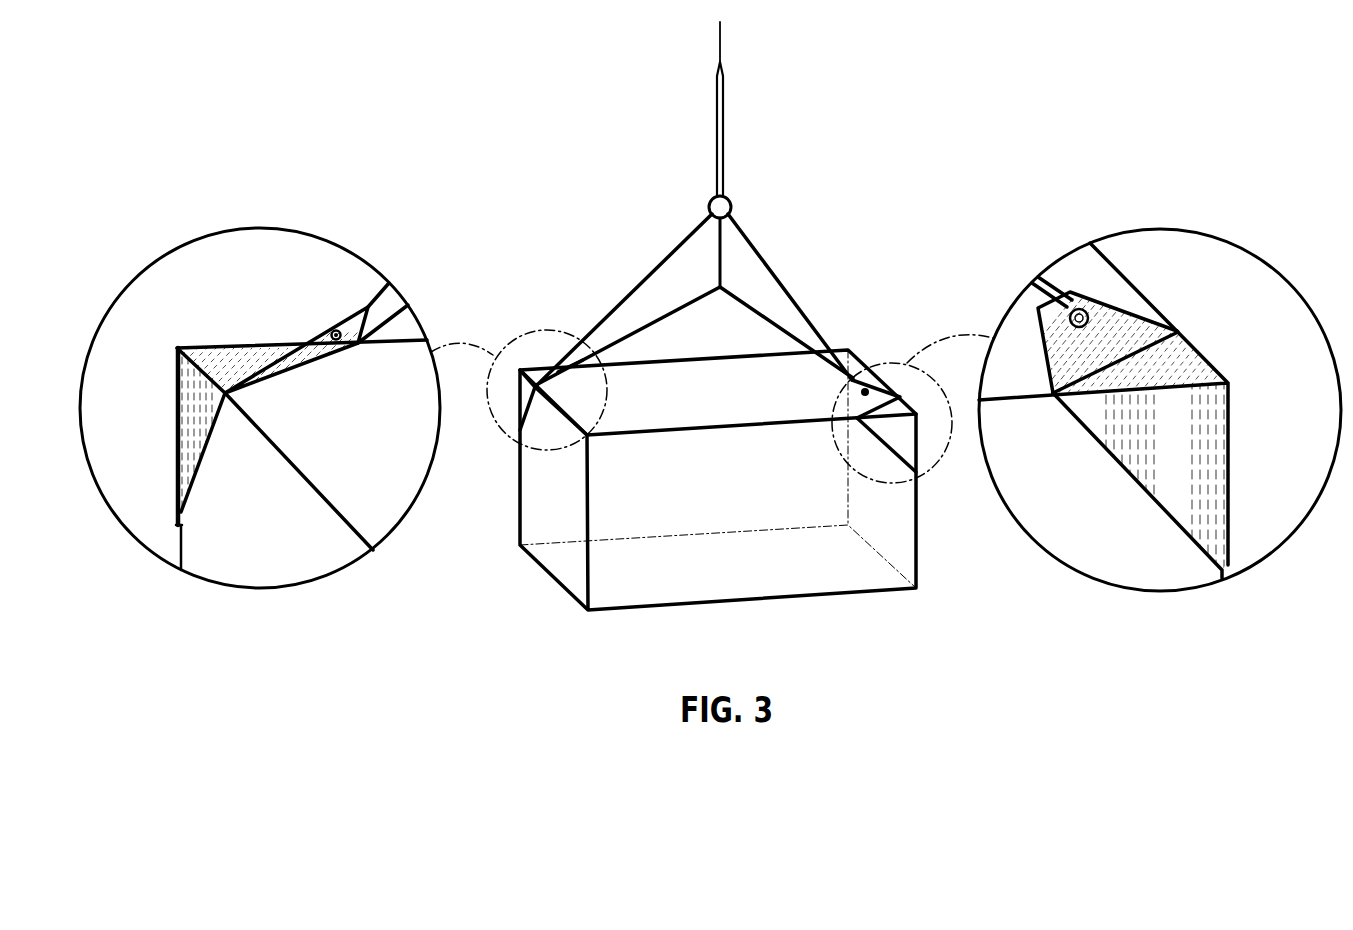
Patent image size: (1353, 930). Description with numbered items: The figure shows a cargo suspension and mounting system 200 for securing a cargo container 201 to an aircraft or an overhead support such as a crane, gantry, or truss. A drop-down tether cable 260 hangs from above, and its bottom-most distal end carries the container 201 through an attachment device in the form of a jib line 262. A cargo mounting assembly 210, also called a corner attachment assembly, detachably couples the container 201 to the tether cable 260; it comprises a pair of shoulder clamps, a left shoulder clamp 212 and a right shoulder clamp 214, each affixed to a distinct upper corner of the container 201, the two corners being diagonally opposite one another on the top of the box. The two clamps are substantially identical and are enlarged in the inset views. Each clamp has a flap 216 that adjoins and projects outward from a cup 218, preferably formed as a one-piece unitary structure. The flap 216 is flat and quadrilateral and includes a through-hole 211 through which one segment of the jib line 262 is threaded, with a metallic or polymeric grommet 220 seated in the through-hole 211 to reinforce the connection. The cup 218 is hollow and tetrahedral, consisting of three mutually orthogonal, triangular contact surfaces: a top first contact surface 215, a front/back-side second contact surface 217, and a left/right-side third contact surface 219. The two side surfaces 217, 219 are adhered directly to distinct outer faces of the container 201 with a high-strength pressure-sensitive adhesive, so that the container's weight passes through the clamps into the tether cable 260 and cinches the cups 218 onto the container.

The cargo suspension and mounting system 200 is at (330, 93).
The cargo container 201 is at (558, 562).
The cargo mounting assembly 210 is at (572, 300).
The through-hole 211 is at (338, 352).
The left shoulder clamp 212 is at (540, 365).
The right shoulder clamp 214 is at (877, 363).
The first contact surface 215 is at (243, 367).
The flap 216 is at (335, 322).
The second contact surface 217 is at (1185, 483).
The cup 218 is at (233, 347).
The third contact surface 219 is at (190, 447).
The grommet 220 is at (333, 343).
The tether cable 260 is at (717, 33).
The jib line 262 is at (665, 260).